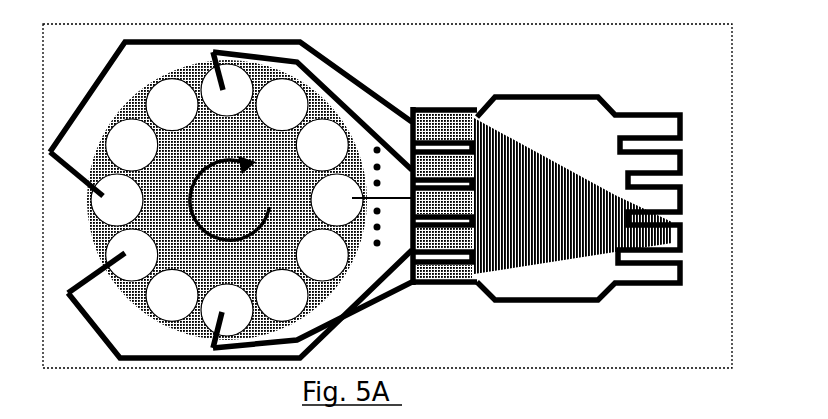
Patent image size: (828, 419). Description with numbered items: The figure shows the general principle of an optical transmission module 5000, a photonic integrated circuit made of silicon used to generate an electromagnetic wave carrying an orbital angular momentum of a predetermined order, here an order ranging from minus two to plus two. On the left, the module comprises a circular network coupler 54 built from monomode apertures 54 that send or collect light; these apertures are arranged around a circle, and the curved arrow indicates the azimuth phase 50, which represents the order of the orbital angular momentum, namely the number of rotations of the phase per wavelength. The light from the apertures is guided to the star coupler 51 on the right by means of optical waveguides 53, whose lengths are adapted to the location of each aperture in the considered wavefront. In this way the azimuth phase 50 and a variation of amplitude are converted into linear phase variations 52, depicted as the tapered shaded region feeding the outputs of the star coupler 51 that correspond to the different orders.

The optical transmission module 5000 is at (120, 370).
The azimuth phase 50 is at (252, 240).
The star coupler 51 is at (612, 103).
The linear phase variations 52 is at (505, 265).
The optical waveguides 53 is at (377, 118).
The circular network coupler 54 is at (235, 82).